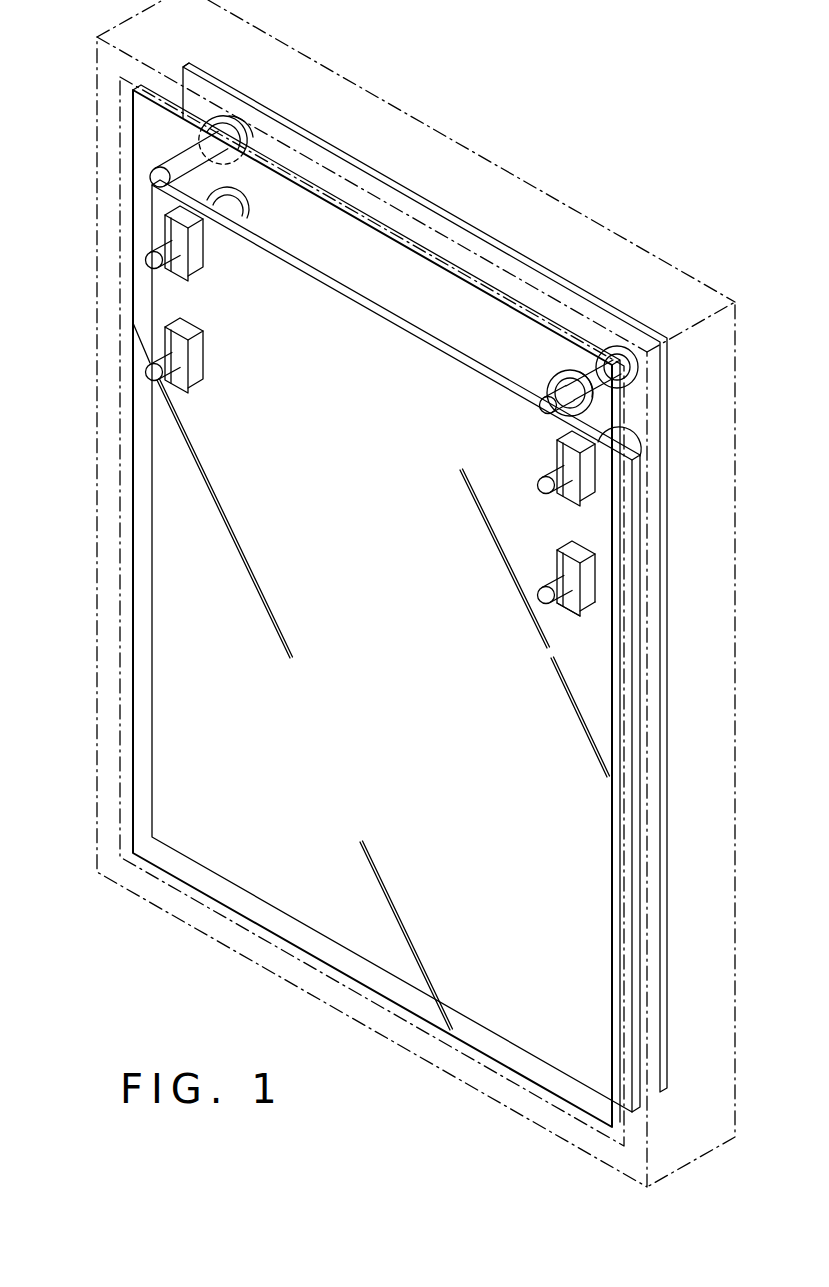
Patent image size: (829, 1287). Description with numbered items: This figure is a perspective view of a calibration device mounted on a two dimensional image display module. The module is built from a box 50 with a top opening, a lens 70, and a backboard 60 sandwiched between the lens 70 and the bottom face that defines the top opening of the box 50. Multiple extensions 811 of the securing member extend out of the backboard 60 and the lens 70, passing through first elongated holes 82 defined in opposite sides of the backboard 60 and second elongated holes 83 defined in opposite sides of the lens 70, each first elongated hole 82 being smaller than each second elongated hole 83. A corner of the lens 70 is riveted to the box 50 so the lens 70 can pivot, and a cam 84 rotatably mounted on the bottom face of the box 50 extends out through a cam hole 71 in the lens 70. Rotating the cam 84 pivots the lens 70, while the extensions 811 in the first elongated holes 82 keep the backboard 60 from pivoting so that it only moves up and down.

The box 50 is at (213, 77).
The backboard 60 is at (160, 461).
The lens 70 is at (139, 145).
The cam hole 71 is at (552, 380).
The first elongated holes 82 is at (588, 597).
The second elongated holes 83 is at (572, 613).
The cam 84 is at (547, 413).
The extensions 811 is at (550, 602).